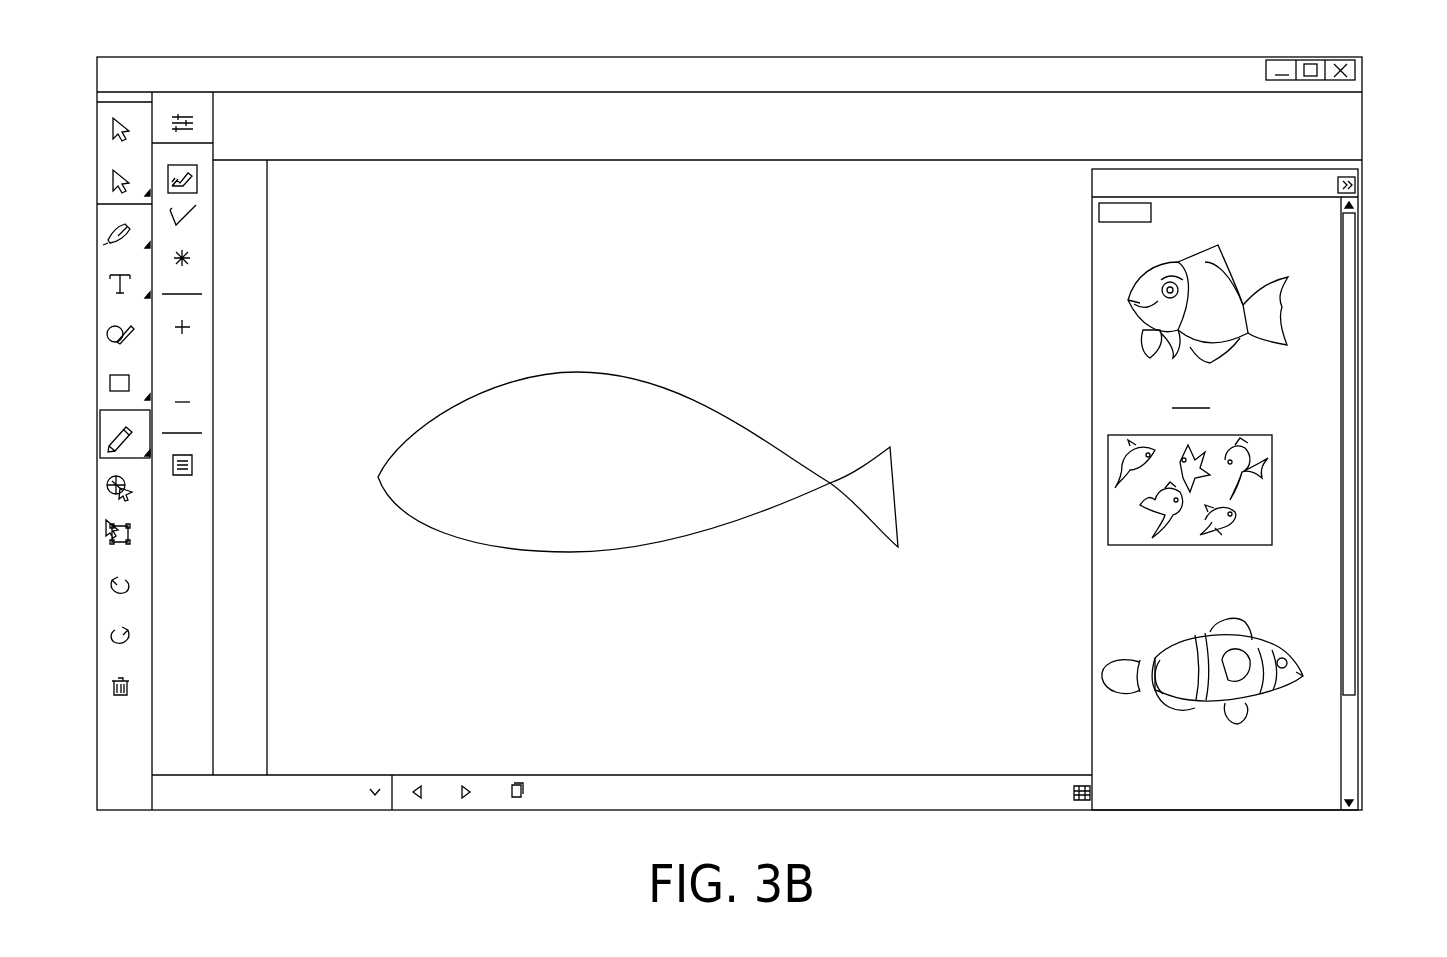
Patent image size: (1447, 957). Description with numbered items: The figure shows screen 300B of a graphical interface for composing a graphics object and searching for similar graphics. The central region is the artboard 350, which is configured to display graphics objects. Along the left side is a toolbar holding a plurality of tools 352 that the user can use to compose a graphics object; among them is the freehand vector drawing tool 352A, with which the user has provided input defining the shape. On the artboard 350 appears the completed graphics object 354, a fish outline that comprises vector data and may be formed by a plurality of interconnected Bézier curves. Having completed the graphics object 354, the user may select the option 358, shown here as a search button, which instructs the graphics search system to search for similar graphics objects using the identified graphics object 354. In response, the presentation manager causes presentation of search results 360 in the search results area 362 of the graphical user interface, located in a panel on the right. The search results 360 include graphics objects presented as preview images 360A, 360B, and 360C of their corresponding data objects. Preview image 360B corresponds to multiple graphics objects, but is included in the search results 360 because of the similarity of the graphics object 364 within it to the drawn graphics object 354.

The screen 300B is at (1262, 850).
The artboard 350 is at (841, 291).
The tools 352 is at (149, 80).
The freehand vector drawing tool 352A is at (210, 175).
The graphics object 354 is at (560, 372).
The option 358 is at (1099, 210).
The search results 360 is at (1302, 224).
The preview image 360A is at (1290, 317).
The preview image 360B is at (1266, 508).
The preview image 360C is at (1308, 668).
The search results area 362 is at (1191, 397).
The graphics object 364 is at (1233, 530).